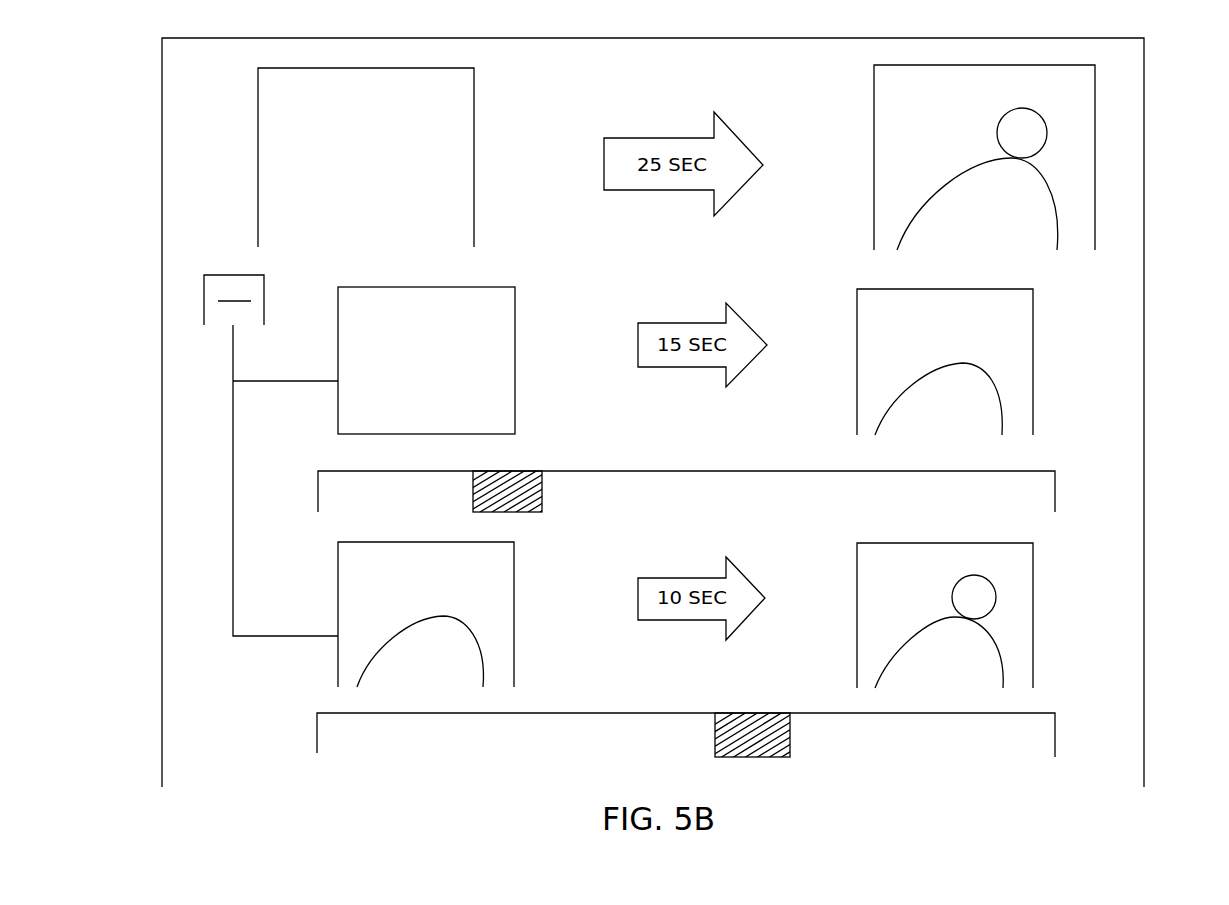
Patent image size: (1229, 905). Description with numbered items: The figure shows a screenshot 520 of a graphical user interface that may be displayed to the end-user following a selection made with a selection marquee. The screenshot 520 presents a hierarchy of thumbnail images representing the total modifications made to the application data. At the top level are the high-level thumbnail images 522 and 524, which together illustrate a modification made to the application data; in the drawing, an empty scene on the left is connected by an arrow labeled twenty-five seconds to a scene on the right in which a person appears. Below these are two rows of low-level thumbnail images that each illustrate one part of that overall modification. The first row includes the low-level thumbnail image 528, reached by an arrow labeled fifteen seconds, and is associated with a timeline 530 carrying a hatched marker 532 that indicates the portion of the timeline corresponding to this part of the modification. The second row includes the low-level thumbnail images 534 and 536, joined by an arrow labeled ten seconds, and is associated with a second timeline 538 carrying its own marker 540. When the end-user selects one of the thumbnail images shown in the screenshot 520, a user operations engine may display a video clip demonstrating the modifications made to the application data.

The screenshot 520 is at (1144, 128).
The high-level thumbnail image 522 is at (474, 141).
The high-level thumbnail image 524 is at (874, 104).
The low-level thumbnail image 528 is at (856, 325).
The timeline 530 is at (1055, 493).
The marker 532 is at (520, 471).
The low-level thumbnail image 534 is at (338, 587).
The low-level thumbnail image 536 is at (857, 583).
The timeline 538 is at (317, 735).
The marker 540 is at (740, 713).